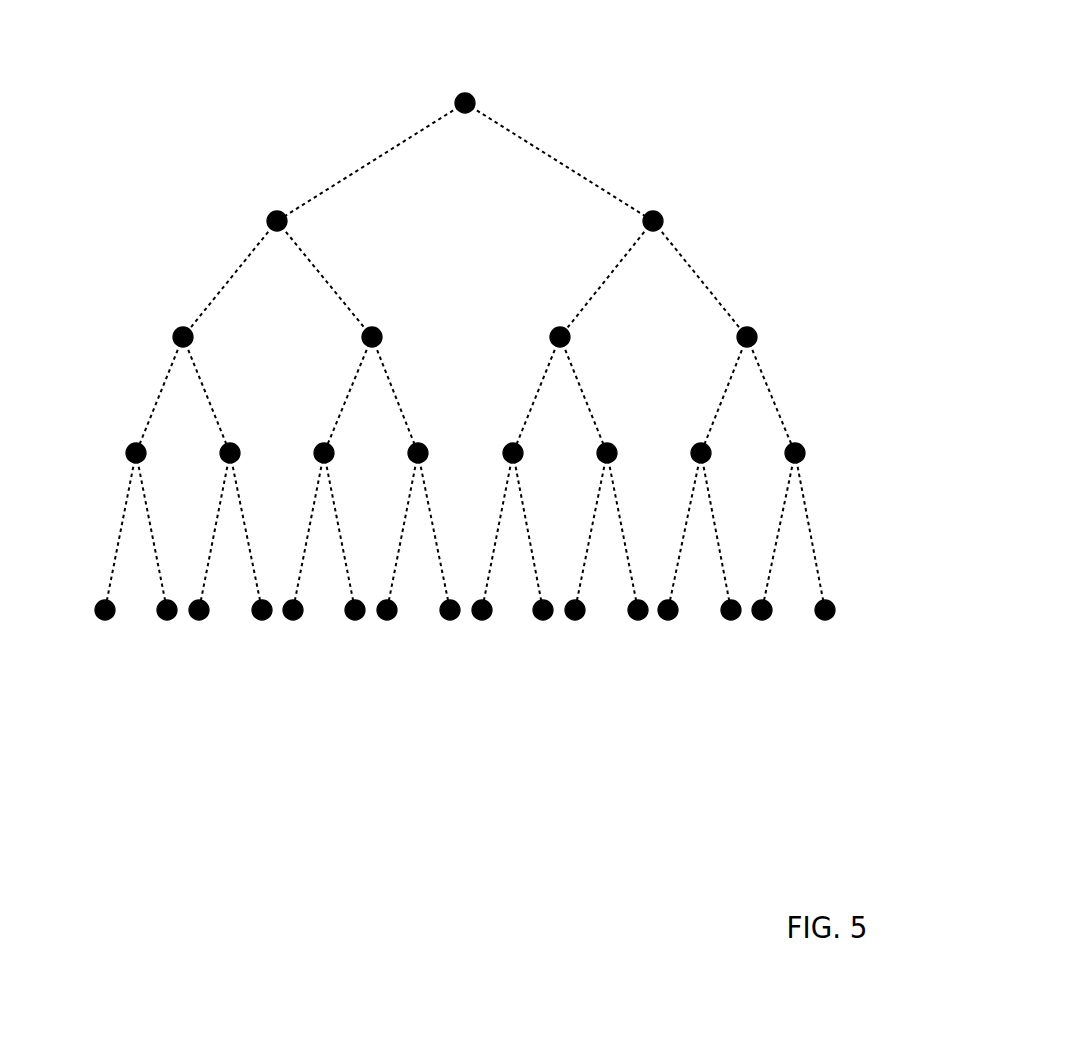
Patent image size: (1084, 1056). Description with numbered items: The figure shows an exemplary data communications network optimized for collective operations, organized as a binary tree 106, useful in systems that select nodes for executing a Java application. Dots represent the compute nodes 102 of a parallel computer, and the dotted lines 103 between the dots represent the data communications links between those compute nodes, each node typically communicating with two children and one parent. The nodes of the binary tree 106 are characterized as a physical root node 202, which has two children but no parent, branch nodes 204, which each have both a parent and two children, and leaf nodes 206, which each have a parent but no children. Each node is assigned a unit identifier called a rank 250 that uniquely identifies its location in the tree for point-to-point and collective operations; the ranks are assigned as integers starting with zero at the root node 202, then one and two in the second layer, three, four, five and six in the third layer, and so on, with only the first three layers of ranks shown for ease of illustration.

The compute nodes 102 is at (543, 618).
The data communications links 103 is at (382, 155).
The binary tree 106 is at (503, 450).
The physical root node 202 is at (497, 87).
The branch nodes 204 is at (848, 166).
The leaf nodes 206 is at (522, 698).
The rank 250 is at (601, 234).